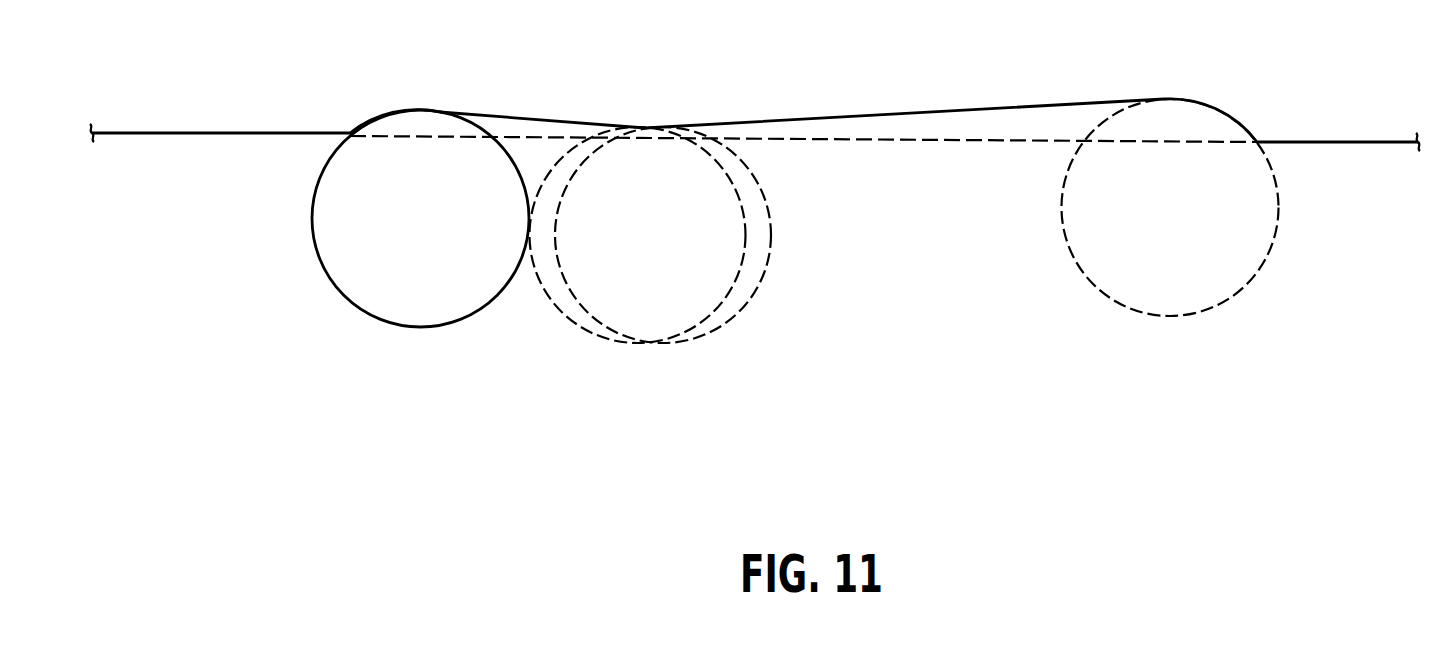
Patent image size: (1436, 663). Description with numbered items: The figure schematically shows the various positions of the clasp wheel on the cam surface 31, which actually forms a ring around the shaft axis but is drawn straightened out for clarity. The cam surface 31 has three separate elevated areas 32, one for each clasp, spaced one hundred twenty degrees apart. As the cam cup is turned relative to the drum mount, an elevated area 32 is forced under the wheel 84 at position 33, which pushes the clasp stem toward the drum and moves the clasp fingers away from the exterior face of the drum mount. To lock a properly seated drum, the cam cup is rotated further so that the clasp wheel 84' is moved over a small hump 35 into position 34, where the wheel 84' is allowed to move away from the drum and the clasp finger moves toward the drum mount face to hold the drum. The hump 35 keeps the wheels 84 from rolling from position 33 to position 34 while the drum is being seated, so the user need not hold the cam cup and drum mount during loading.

The cam surface 31 is at (981, 109).
The elevated area 32 is at (527, 120).
The position 33 is at (418, 373).
The position 34 is at (1168, 378).
The hump 35 is at (649, 374).
The wheel 84 is at (391, 218).
The clasp wheel 84' is at (1208, 207).